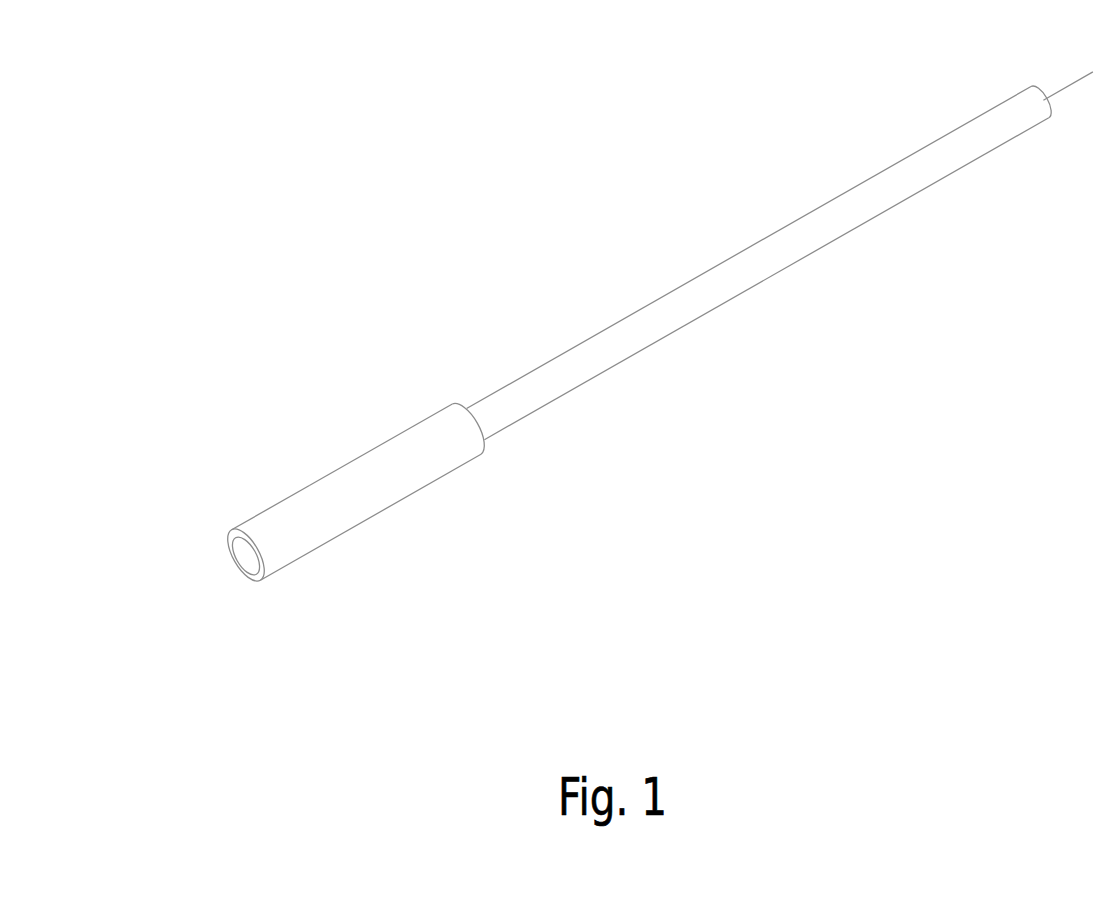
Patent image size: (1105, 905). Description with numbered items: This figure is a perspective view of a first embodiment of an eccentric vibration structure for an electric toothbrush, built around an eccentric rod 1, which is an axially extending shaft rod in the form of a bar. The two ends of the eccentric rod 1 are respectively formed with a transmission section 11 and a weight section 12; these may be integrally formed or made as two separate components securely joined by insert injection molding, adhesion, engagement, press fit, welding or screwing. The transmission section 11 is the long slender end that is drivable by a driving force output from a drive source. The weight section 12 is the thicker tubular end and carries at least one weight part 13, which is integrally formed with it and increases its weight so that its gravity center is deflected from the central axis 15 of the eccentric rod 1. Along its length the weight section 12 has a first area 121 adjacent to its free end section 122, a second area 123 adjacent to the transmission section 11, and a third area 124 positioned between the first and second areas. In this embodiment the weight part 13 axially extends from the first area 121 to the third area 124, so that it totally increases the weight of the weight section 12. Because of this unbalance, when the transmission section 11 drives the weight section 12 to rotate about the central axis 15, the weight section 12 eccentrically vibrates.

The eccentric rod 1 is at (498, 117).
The transmission section 11 is at (941, 244).
The weight section 12 is at (406, 592).
The first area 121 is at (262, 528).
The free end section 122 is at (247, 573).
The second area 123 is at (342, 480).
The third area 124 is at (452, 418).
The weight part 13 is at (232, 533).
The central axis 15 is at (255, 550).